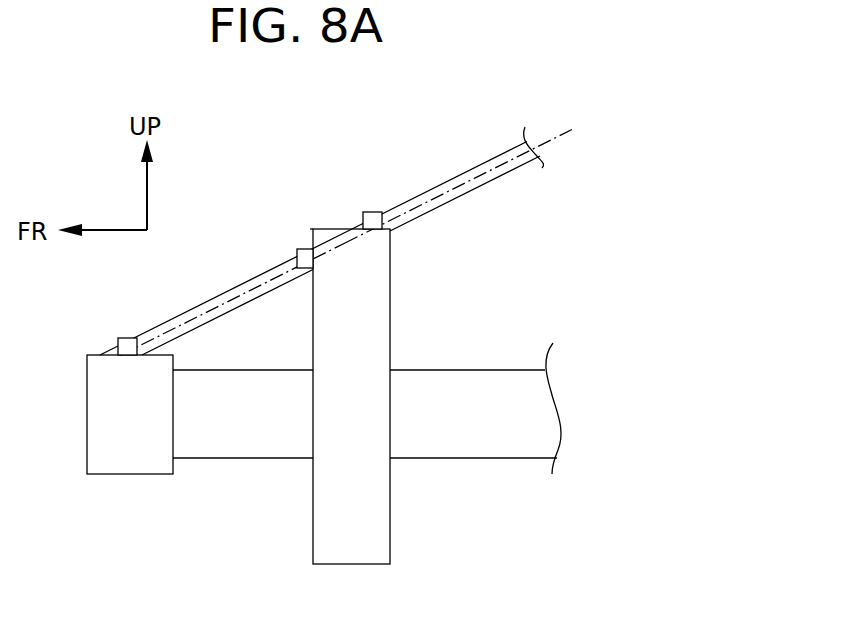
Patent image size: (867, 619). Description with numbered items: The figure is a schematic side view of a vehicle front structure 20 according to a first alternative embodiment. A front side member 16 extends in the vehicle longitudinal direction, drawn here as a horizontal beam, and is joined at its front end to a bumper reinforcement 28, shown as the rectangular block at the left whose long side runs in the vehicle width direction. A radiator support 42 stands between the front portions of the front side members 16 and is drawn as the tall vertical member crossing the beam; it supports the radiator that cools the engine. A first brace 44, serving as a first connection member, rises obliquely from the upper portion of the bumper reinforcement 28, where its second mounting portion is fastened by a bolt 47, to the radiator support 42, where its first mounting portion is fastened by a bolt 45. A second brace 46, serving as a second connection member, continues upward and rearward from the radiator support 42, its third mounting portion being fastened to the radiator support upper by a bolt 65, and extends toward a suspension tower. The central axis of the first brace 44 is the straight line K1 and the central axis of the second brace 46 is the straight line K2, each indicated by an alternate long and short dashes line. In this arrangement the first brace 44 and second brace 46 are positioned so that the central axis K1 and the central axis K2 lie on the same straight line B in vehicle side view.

The front side member 16 is at (480, 438).
The vehicle front structure 20 is at (310, 227).
The bumper reinforcement 28 is at (105, 418).
The radiator support 42 is at (392, 302).
The first brace 44 is at (227, 315).
The bolt 45 is at (294, 257).
The second brace 46 is at (458, 200).
The bolt 47 is at (128, 338).
The bolt 65 is at (372, 212).
The straight line B is at (338, 242).
The central axis of first brace K1 is at (205, 313).
The central axis of second brace K2 is at (443, 193).